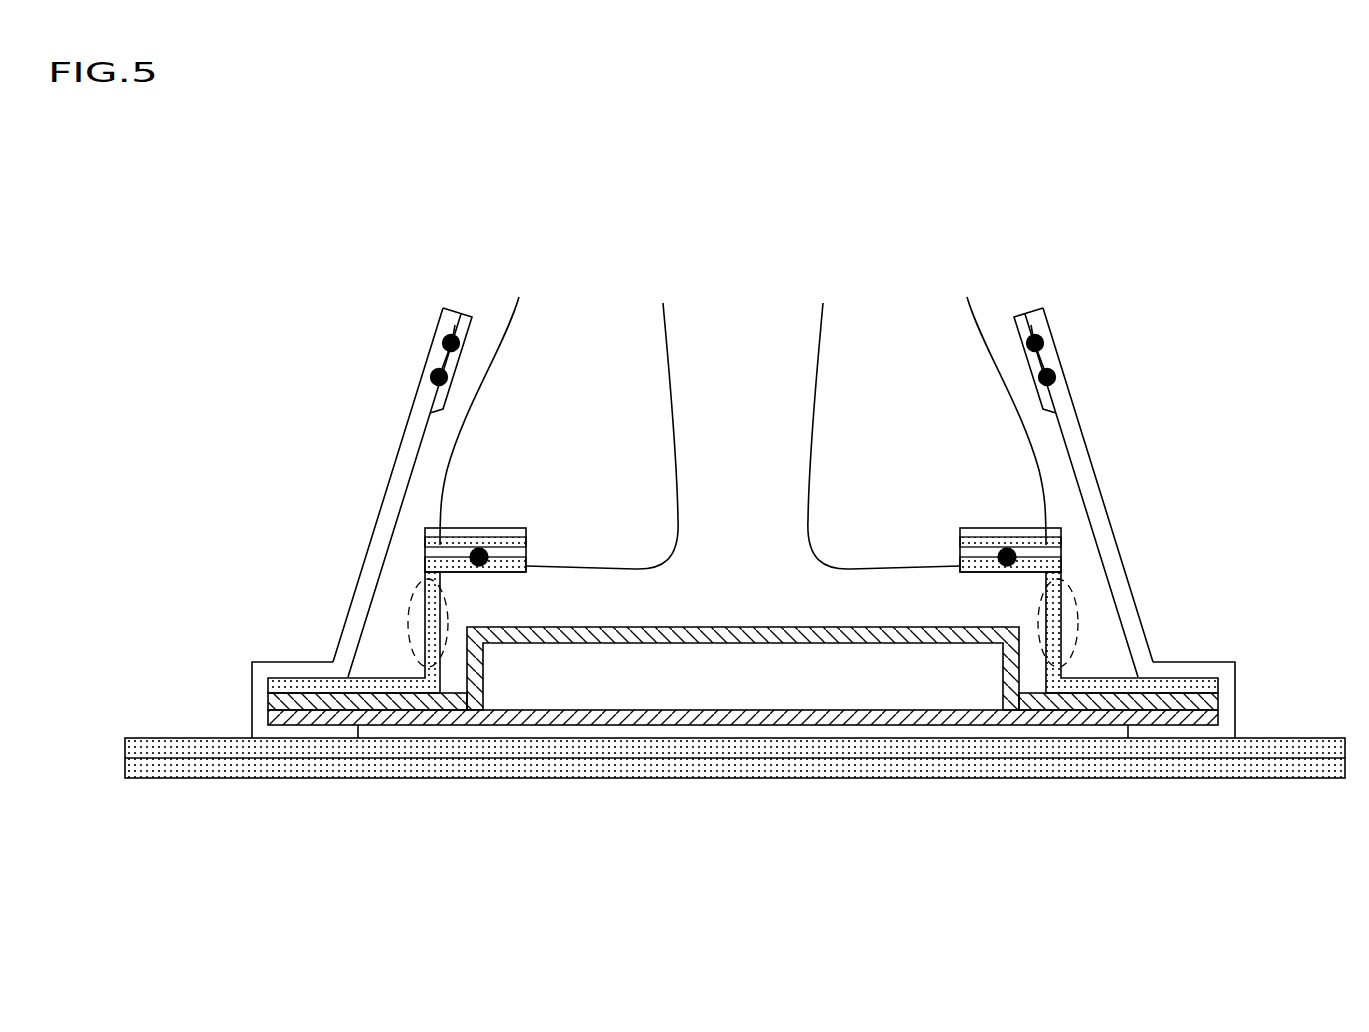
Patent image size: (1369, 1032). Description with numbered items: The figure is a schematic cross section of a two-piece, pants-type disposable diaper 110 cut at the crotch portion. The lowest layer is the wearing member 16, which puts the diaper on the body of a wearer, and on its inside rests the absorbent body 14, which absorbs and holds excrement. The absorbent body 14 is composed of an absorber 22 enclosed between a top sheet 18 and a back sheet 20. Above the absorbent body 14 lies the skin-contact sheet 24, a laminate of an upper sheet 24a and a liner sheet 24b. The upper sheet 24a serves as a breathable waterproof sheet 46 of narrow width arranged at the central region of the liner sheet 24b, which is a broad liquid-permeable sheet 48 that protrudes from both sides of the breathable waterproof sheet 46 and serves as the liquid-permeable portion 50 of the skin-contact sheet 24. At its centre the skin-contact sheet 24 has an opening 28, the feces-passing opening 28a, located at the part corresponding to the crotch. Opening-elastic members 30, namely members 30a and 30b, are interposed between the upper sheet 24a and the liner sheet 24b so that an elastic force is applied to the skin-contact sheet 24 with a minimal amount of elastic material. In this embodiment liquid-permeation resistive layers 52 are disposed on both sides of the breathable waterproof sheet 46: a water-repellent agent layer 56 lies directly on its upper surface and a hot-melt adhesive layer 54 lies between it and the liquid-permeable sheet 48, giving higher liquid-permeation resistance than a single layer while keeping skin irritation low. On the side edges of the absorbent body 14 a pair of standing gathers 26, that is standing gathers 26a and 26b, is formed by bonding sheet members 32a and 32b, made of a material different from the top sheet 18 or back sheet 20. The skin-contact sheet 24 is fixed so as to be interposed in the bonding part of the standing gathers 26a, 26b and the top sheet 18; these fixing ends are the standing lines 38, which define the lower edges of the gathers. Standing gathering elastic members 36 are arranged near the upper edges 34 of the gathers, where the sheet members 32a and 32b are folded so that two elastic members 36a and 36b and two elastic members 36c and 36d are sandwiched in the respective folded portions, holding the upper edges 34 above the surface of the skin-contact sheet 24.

The disposable diaper 110 is at (1195, 190).
The absorbent body 14 is at (743, 760).
The wearing member 16 is at (1045, 748).
The top sheet 18 is at (480, 672).
The back sheet 20 is at (483, 846).
The absorber 22 is at (552, 685).
The skin-contact sheet 24 is at (743, 389).
The upper sheet 24a is at (743, 404).
The liner sheet 24b is at (743, 416).
The breathable waterproof sheet 46 is at (743, 404).
The liquid-permeable sheet 48 is at (743, 416).
The standing gathers 26 is at (741, 492).
The standing gather 26a is at (330, 492).
The standing gather 26b is at (1154, 492).
The opening 28 is at (750, 477).
The feces-passing opening 28a is at (758, 540).
The opening-elastic members 30 is at (743, 502).
The opening-elastic member 30a is at (1006, 547).
The opening-elastic member 30b is at (480, 547).
The sheet member 32a is at (377, 532).
The sheet member 32b is at (1109, 532).
The upper edges 34 is at (448, 292).
The standing gathering elastic members 36 is at (742, 341).
The standing gathering elastic member 36a is at (444, 340).
The standing gathering elastic member 36b is at (431, 379).
The standing gathering elastic member 36c is at (1042, 340).
The standing gathering elastic member 36d is at (1055, 379).
The standing lines 38 is at (326, 655).
The liquid-permeable portion 50 is at (447, 610).
The liquid-permeation resistive layer 52 is at (743, 527).
The hot-melt adhesive layer 54 is at (526, 555).
The water-repellent agent layer 56 is at (508, 527).